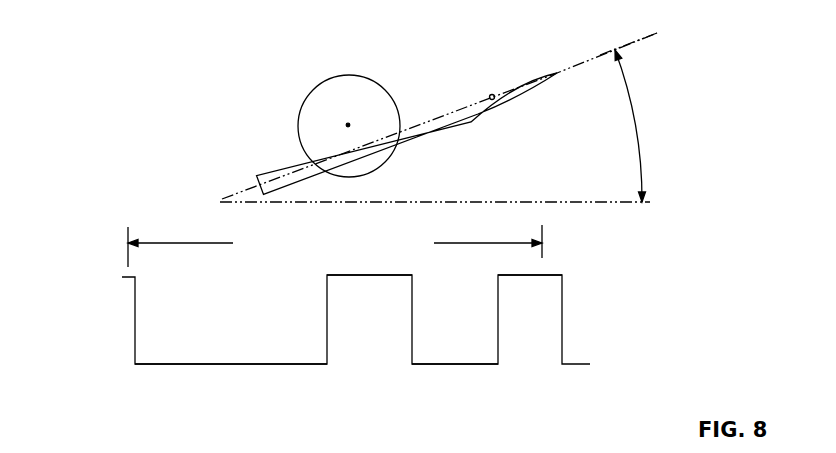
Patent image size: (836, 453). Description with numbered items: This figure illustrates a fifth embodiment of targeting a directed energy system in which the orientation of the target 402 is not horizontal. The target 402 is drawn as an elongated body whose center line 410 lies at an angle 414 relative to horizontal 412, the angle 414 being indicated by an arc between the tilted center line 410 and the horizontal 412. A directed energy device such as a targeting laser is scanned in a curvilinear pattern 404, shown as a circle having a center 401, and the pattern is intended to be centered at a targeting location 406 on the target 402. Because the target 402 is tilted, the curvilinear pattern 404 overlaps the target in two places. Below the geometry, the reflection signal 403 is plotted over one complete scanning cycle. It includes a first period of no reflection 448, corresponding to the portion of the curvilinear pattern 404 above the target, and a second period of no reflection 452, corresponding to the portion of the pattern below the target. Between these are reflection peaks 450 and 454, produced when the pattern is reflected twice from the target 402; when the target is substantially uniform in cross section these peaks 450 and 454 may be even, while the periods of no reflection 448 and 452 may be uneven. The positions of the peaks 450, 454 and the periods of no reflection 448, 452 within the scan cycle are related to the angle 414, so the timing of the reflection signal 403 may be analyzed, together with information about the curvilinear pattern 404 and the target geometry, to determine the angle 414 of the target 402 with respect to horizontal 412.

The center 401 is at (350, 124).
The target 402 is at (270, 170).
The reflection signal 403 is at (110, 320).
The curvilinear pattern 404 is at (345, 73).
The targeting location 406 is at (494, 99).
The center line 410 is at (633, 42).
The horizontal 412 is at (643, 202).
The angle 414 is at (635, 128).
The first period of no reflection 448 is at (185, 364).
The reflection peak 450 is at (327, 303).
The second period of no reflection 452 is at (450, 364).
The reflection peak 454 is at (563, 305).